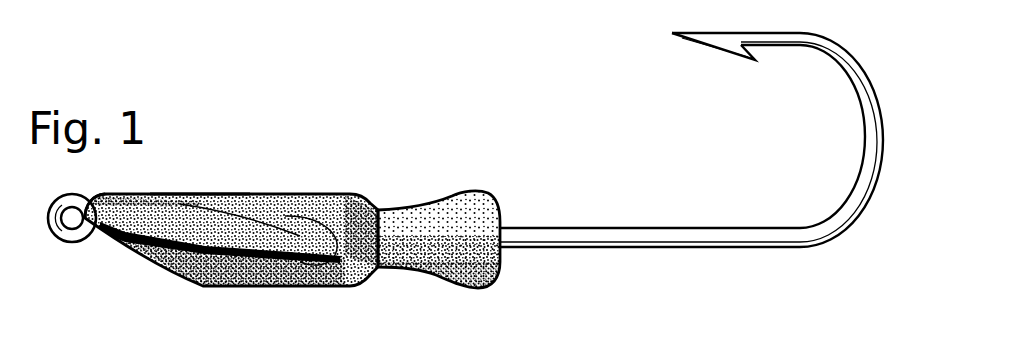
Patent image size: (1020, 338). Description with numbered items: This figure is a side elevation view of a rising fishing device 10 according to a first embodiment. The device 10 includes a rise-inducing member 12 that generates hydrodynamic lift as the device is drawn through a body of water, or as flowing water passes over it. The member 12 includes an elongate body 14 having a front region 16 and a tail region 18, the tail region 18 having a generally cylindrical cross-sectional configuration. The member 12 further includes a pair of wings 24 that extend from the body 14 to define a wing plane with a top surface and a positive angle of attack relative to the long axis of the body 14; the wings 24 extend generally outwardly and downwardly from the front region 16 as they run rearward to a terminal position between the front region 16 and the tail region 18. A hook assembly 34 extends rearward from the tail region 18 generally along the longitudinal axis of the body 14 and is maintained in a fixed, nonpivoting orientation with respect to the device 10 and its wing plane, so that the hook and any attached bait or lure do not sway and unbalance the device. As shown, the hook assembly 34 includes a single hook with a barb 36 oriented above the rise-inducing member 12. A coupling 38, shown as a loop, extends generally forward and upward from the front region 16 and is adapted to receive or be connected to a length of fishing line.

The rising fishing device 10 is at (272, 135).
The rise-inducing member 12 is at (304, 168).
The elongate body 14 is at (200, 194).
The front region 16 is at (97, 186).
The tail region 18 is at (475, 178).
The wings 24 is at (240, 200).
The hook assembly 34 is at (652, 228).
The barb 36 is at (704, 46).
The coupling 38 is at (62, 248).